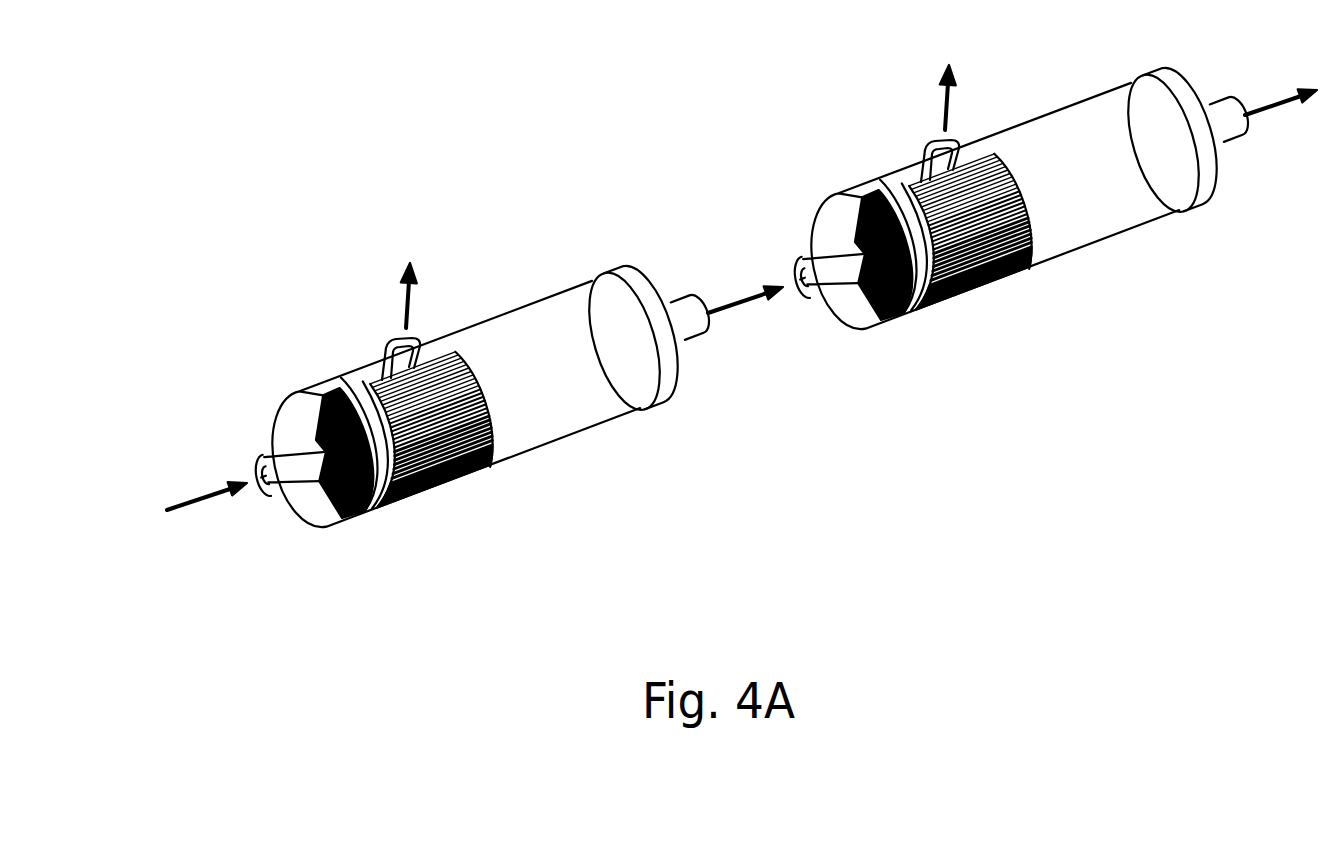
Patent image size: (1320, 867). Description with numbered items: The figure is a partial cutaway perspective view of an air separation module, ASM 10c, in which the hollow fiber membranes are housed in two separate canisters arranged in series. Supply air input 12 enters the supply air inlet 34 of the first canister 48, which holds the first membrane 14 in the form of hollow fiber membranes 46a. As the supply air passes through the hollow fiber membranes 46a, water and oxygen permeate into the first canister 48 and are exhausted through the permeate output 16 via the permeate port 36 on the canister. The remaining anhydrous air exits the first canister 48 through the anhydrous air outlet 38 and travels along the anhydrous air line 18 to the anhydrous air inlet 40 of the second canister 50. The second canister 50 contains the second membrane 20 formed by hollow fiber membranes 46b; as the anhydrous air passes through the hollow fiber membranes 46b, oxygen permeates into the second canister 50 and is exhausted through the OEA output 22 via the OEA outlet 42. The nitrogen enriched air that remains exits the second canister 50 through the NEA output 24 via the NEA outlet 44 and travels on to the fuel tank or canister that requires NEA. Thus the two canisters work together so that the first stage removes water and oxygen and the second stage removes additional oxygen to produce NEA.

The ASM 10c is at (292, 200).
The supply air input 12 is at (198, 500).
The first membrane 14 is at (474, 483).
The permeate output 16 is at (414, 303).
The anhydrous air line 18 is at (733, 307).
The second membrane 20 is at (1014, 288).
The OEA output 22 is at (946, 117).
The NEA output 24 is at (1287, 111).
The supply air inlet 34 is at (252, 473).
The permeate port 36 is at (384, 341).
The anhydrous air outlet 38 is at (671, 297).
The anhydrous air inlet 40 is at (796, 275).
The OEA outlet 42 is at (919, 142).
The NEA outlet 44 is at (1217, 98).
The hollow fiber membranes 46a is at (432, 410).
The hollow fiber membranes 46b is at (973, 223).
The first canister 48 is at (499, 313).
The second canister 50 is at (1051, 105).